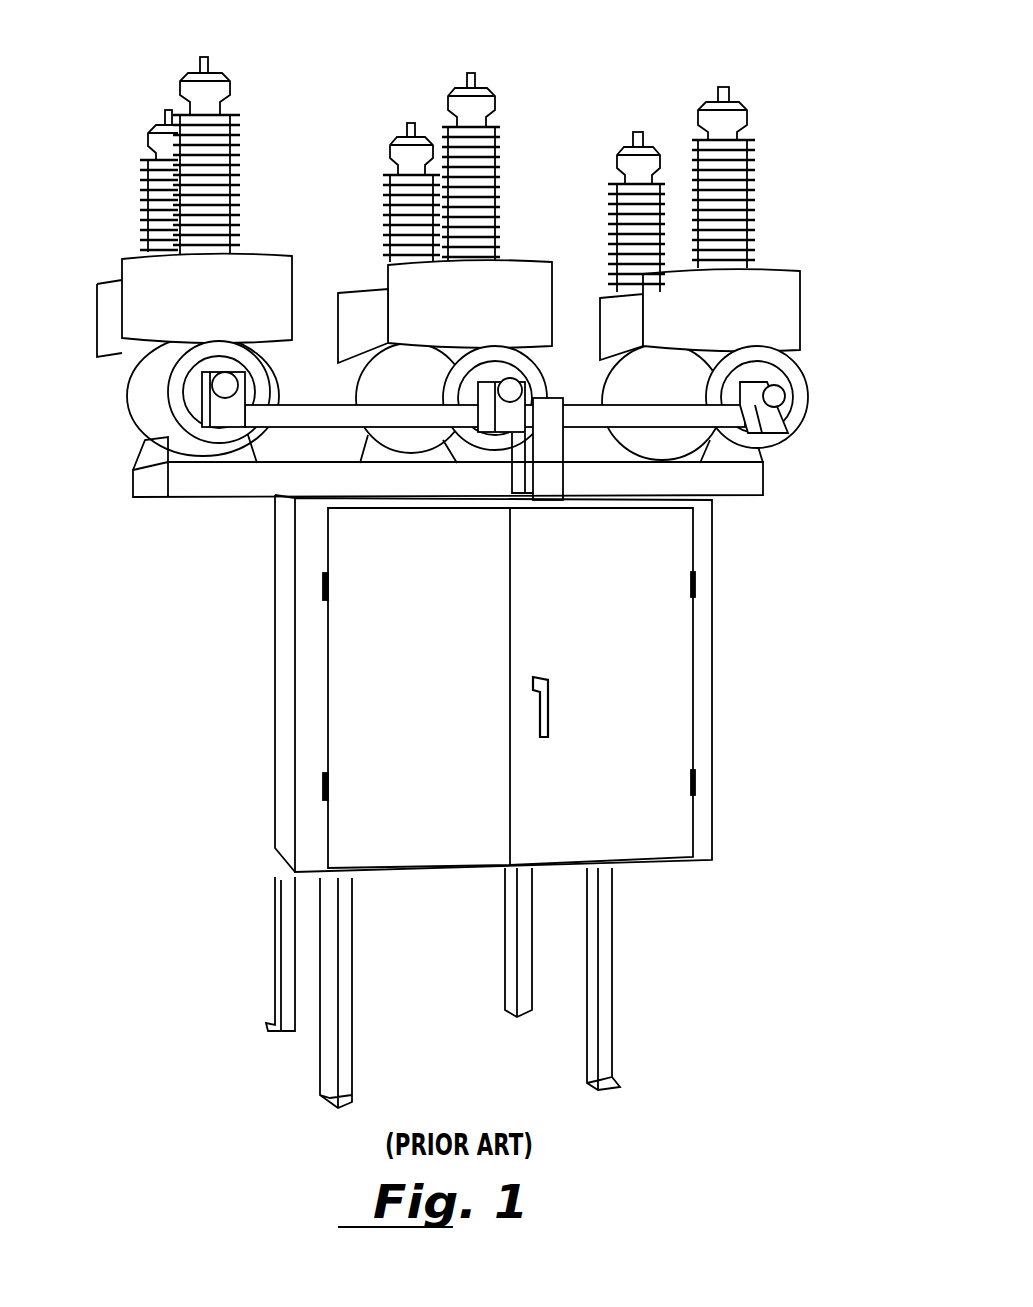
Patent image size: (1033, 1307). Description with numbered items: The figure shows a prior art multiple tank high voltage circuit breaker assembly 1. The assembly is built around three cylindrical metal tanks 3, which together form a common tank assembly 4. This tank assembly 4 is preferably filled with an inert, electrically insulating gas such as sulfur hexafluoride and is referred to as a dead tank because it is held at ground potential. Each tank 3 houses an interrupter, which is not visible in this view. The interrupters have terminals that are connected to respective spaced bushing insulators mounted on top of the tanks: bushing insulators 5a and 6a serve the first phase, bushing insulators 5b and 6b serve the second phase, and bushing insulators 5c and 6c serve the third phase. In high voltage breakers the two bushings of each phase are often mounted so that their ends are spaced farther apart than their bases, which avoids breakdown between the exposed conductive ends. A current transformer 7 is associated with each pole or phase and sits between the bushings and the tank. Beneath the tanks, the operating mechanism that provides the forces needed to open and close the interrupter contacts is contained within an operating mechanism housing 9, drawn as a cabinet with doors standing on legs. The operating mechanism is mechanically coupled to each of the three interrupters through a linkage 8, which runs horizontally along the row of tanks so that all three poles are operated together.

The circuit breaker assembly 1 is at (786, 82).
The cylindrical metal tank 3 is at (143, 394).
The tank assembly 4 is at (810, 431).
The bushing insulator 5a is at (750, 167).
The bushing insulator 5b is at (497, 177).
The bushing insulator 5c is at (233, 174).
The bushing insulator 6a is at (620, 196).
The bushing insulator 6b is at (390, 194).
The bushing insulator 6c is at (143, 210).
The current transformer 7 is at (100, 305).
The linkage 8 is at (657, 415).
The operating mechanism housing 9 is at (438, 673).